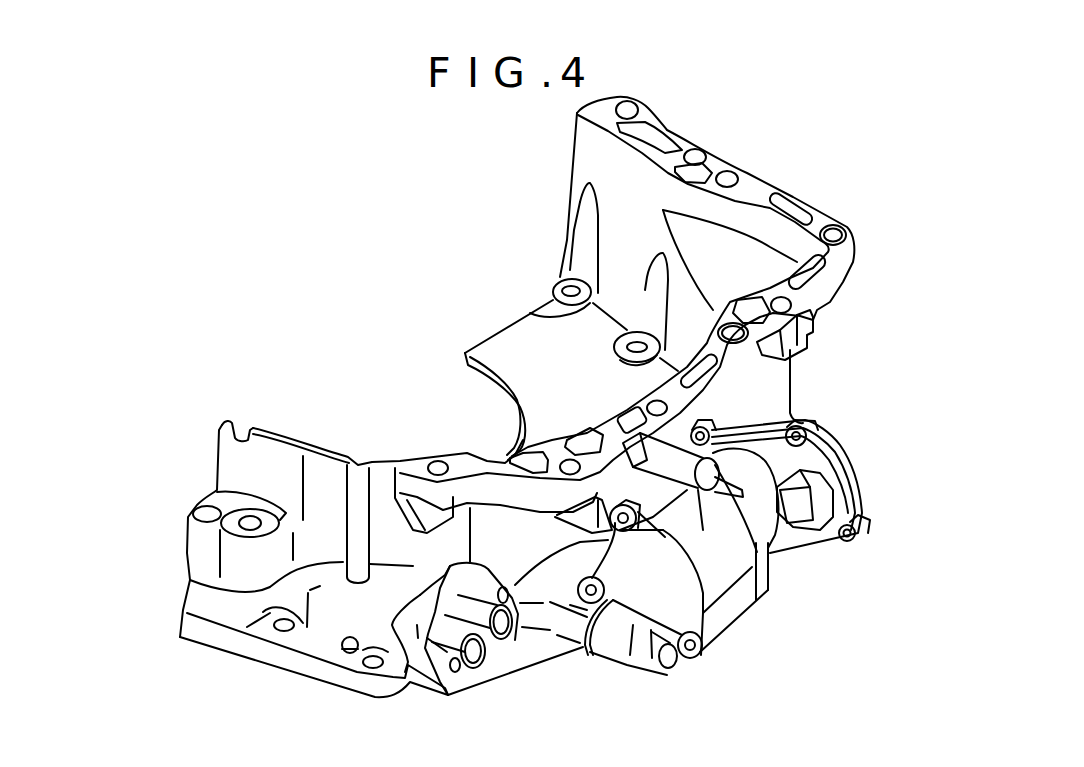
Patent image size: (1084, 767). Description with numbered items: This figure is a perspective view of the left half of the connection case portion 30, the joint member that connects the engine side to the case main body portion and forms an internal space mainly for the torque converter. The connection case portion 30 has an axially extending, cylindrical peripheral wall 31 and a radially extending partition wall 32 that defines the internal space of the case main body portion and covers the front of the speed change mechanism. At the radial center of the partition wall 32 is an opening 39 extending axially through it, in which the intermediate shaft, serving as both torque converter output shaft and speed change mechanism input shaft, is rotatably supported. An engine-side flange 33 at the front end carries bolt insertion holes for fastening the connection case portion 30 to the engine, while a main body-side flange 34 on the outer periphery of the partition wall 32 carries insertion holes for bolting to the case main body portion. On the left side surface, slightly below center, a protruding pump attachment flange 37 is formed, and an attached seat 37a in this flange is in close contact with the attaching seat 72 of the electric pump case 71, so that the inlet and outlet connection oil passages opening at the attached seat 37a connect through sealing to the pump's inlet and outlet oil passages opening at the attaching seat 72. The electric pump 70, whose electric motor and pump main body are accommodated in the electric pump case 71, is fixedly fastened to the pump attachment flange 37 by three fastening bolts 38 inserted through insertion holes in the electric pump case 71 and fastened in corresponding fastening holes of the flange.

The connection case portion 30 is at (636, 289).
The peripheral wall 31 is at (402, 577).
The partition wall 32 is at (525, 357).
The engine-side flange 33 is at (830, 222).
The main body-side flange 34 is at (287, 650).
The pump attachment flange 37 is at (563, 627).
The attached seat 37a is at (592, 658).
The fastening bolts 38 is at (672, 666).
The opening 39 is at (489, 424).
The electric pump 70 is at (750, 579).
The electric pump case 71 is at (733, 612).
The attaching seat 72 is at (684, 669).